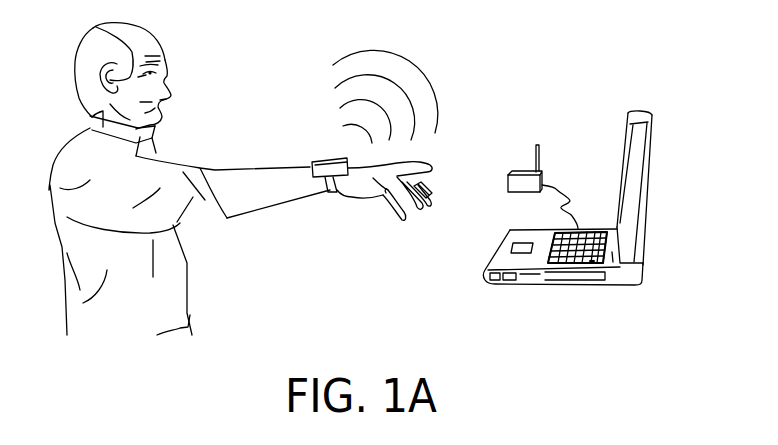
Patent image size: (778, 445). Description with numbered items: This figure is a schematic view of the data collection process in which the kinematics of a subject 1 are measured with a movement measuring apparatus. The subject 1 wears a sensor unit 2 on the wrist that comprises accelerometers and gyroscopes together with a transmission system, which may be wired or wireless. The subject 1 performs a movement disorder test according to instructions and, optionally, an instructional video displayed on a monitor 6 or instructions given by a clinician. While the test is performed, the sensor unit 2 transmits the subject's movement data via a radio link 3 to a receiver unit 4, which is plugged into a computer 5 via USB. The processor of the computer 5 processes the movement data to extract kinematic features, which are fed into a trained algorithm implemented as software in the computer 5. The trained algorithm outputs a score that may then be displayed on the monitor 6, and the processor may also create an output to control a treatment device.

The subject 1 is at (55, 143).
The sensor unit 2 is at (305, 157).
The radio link 3 is at (423, 63).
The receiver unit 4 is at (547, 167).
The computer 5 is at (547, 288).
The monitor 6 is at (647, 112).